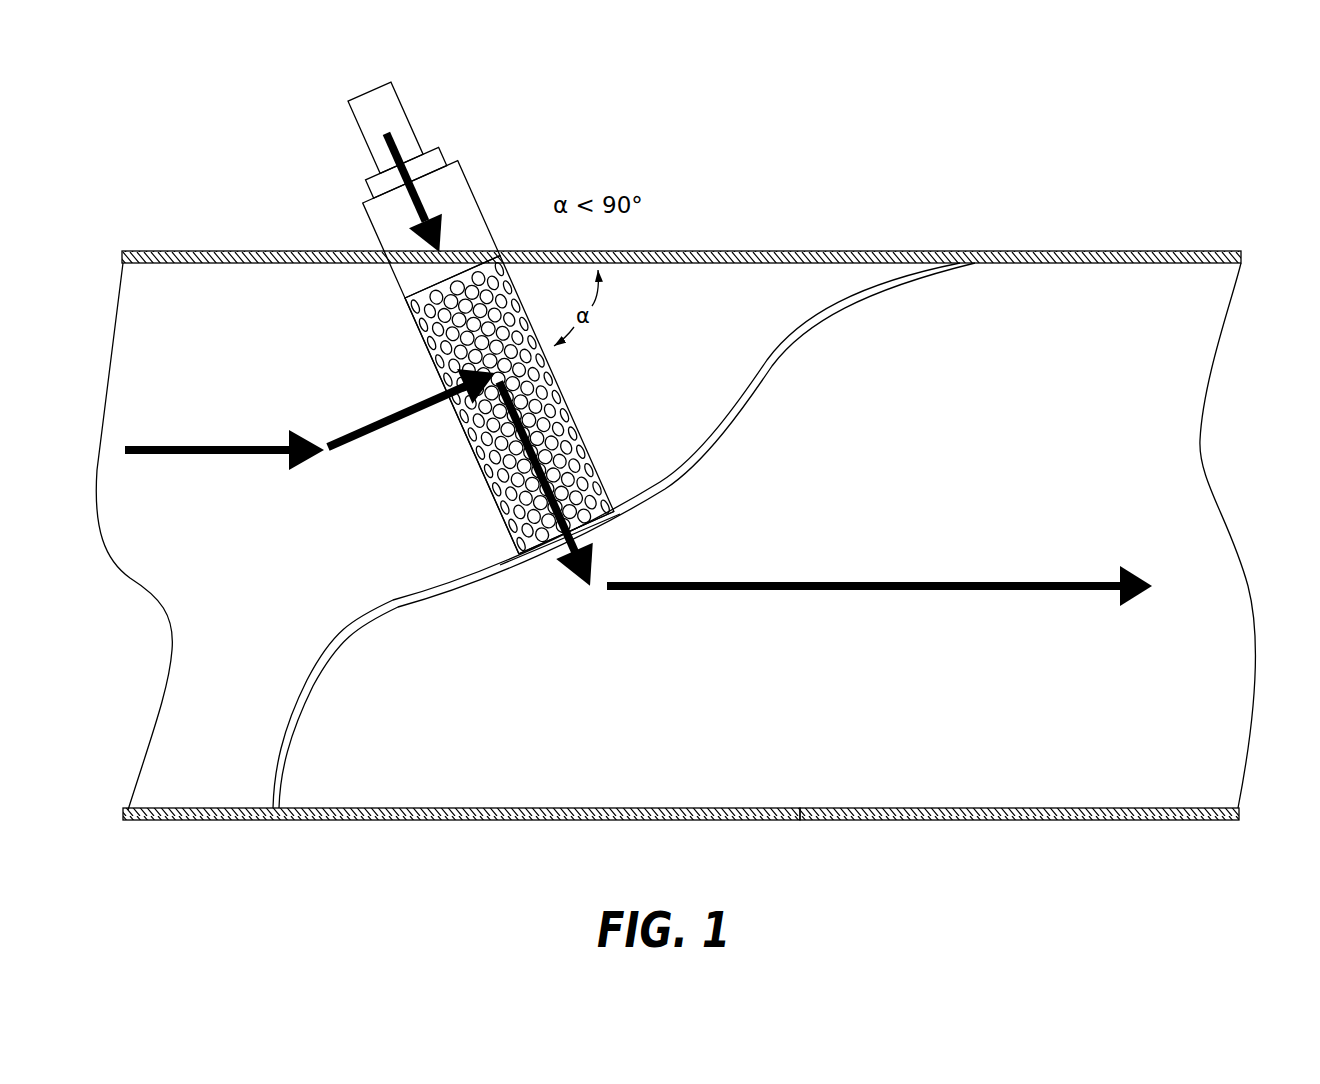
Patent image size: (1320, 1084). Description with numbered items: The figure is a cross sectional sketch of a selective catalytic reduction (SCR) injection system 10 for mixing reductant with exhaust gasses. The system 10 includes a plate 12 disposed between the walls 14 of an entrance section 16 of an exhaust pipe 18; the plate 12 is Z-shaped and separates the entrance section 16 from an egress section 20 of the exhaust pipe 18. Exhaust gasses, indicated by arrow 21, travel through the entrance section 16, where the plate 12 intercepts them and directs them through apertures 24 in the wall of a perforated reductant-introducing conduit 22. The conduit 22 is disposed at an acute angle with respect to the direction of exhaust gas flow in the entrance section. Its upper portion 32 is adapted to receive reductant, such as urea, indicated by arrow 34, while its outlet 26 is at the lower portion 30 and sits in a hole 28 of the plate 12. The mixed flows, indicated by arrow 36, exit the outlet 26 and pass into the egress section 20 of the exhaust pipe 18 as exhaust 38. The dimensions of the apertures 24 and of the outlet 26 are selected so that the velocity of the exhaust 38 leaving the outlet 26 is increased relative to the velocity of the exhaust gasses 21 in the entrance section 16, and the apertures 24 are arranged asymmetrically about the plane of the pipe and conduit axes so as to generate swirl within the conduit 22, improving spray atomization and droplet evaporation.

The selective catalytic reduction (SCR) injection system 10 is at (897, 152).
The plate 12 is at (305, 691).
The walls 14 is at (175, 251).
The entrance section 16 is at (205, 557).
The exhaust pipe 18 is at (1088, 822).
The egress section 20 is at (1075, 460).
The exhaust gasses 21 is at (176, 462).
The reductant-introducing conduit 22 is at (421, 357).
The apertures 24 is at (570, 475).
The outlet 26 is at (607, 527).
The hole 28 is at (537, 558).
The lower portion 30 is at (497, 543).
The upper portion 32 is at (467, 177).
The reductant 34 is at (372, 160).
The mixed flows 36 is at (573, 583).
The exhaust 38 is at (845, 592).